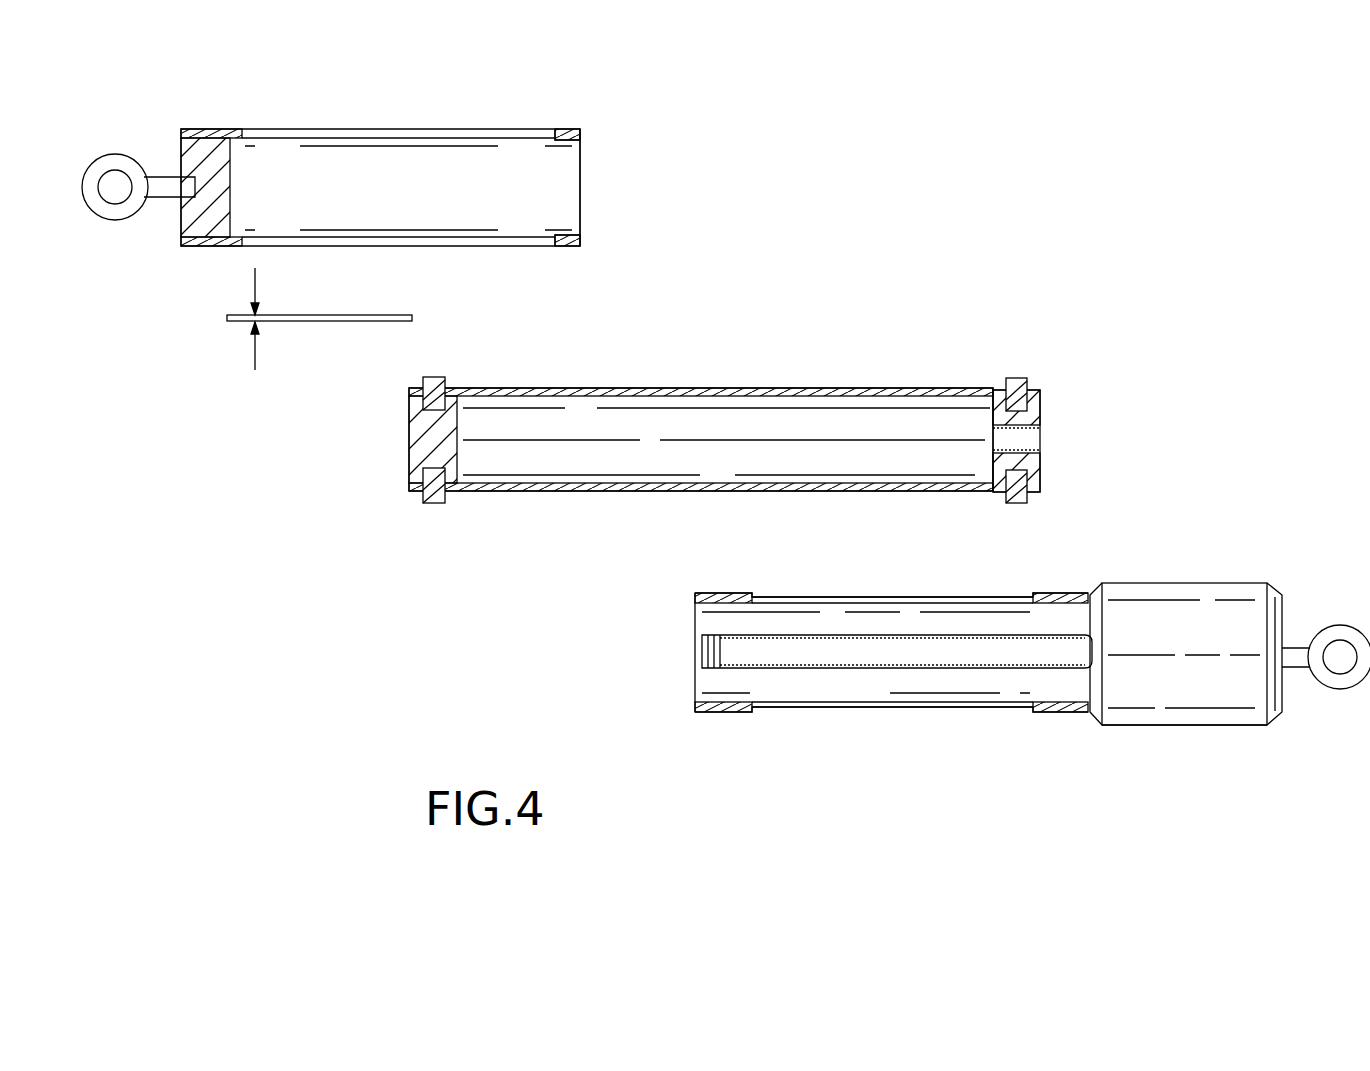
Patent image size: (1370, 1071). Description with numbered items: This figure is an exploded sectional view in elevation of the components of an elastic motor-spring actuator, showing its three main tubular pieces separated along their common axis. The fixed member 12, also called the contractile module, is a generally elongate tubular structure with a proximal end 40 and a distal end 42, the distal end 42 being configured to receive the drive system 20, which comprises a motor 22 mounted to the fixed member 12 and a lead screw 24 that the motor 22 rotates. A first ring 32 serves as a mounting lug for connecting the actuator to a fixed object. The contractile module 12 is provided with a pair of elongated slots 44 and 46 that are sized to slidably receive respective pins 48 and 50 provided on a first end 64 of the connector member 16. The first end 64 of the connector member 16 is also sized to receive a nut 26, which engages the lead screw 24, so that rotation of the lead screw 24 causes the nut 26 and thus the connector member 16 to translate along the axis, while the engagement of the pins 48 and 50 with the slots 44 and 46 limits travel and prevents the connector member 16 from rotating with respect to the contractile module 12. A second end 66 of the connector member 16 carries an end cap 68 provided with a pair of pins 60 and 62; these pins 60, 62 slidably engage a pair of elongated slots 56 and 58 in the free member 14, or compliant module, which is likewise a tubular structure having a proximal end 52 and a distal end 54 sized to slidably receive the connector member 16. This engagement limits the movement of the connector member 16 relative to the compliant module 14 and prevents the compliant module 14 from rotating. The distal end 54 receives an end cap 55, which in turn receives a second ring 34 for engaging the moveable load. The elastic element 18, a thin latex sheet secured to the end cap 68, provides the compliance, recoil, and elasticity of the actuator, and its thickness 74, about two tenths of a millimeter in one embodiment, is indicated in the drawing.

The fixed member 12 is at (708, 735).
The free member 14 is at (535, 115).
The connector member 16 is at (757, 372).
The elastic element 18 is at (334, 342).
The drive system 20 is at (1195, 570).
The motor 22 is at (1165, 727).
The lead screw 24 is at (805, 668).
The nut 26 is at (1042, 420).
The first ring 32 is at (1345, 625).
The second ring 34 is at (112, 155).
The proximal end 40 is at (695, 660).
The distal end 42 is at (1060, 712).
The elongated slot 44 is at (868, 597).
The elongated slot 46 is at (883, 708).
The pin 48 is at (1022, 378).
The pin 50 is at (1016, 503).
The proximal end 52 is at (582, 186).
The distal end 54 is at (188, 248).
The end cap 55 is at (232, 195).
The elongated slot 56 is at (378, 128).
The elongated slot 58 is at (476, 248).
The pin 60 is at (434, 377).
The pin 62 is at (430, 503).
The first end 64 is at (978, 390).
The second end 66 is at (497, 492).
The end cap 68 is at (409, 448).
The thickness 74 is at (253, 355).